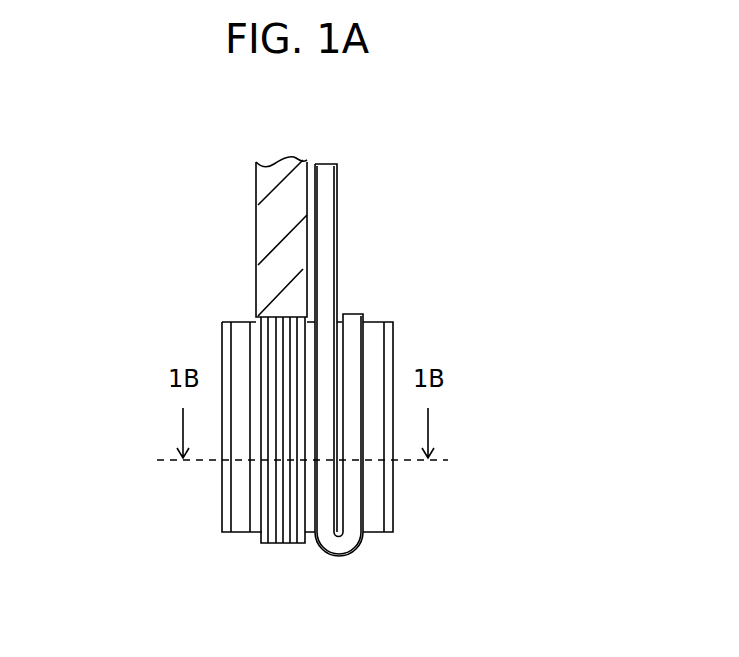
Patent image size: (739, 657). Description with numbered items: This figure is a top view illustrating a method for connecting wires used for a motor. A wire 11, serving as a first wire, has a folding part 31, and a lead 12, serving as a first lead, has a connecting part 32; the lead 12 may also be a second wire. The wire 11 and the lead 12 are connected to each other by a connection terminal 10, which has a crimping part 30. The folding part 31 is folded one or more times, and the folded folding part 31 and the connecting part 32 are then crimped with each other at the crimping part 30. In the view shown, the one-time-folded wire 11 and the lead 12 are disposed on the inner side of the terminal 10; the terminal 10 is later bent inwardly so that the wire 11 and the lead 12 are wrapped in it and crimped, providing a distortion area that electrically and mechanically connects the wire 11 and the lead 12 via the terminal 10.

The connection terminal 10 is at (335, 363).
The wire 11 is at (325, 238).
The lead 12 is at (275, 255).
The crimping part 30 is at (240, 492).
The folding part 31 is at (348, 362).
The connecting part 32 is at (282, 362).